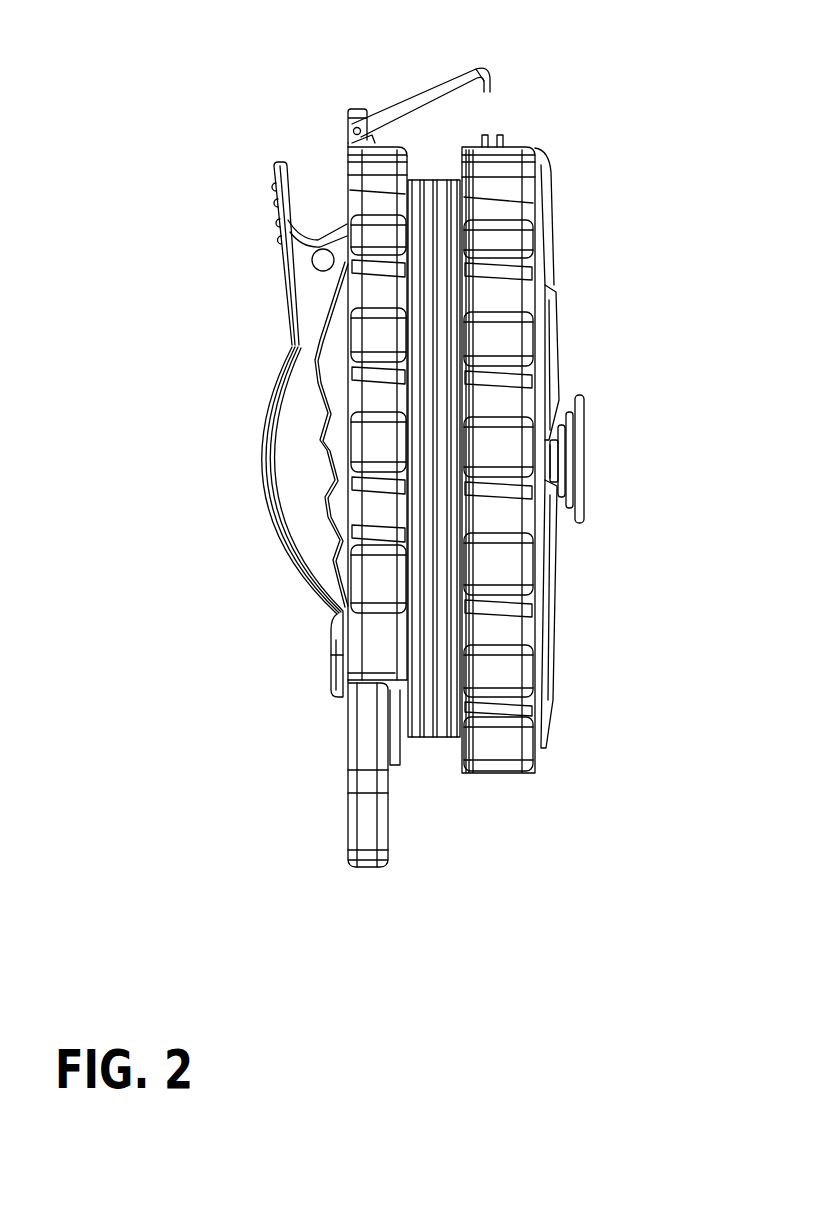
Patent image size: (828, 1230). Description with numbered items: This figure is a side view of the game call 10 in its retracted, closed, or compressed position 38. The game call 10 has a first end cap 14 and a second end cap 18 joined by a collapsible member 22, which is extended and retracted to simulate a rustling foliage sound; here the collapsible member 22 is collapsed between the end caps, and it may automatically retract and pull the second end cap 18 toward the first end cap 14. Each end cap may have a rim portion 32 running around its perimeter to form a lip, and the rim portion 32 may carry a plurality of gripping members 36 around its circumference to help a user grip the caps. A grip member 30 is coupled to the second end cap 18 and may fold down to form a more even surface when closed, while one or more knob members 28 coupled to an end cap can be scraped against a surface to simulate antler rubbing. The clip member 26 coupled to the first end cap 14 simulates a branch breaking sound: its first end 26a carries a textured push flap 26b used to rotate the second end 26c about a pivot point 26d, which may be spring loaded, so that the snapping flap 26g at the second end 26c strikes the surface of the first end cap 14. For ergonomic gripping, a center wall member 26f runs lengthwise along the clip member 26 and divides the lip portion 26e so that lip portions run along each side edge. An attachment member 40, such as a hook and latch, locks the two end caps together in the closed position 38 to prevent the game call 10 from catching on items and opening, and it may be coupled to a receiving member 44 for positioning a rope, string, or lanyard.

The game call 10 is at (208, 150).
The first end cap 14 is at (347, 708).
The second end cap 18 is at (543, 633).
The collapsible member 22 is at (432, 745).
The clip member 26 is at (305, 320).
The first end 26a is at (264, 227).
The textured push flap 26b is at (273, 188).
The second end 26c is at (313, 626).
The pivot point 26d is at (320, 260).
The lip portion 26e is at (268, 490).
The center wall member 26f is at (306, 470).
The snapping flap 26g is at (340, 660).
The knob member 28 is at (347, 760).
The grip member 30 is at (584, 473).
The rim portion 32 is at (500, 748).
The gripping members 36 is at (385, 242).
The closed position 38 is at (580, 762).
The attachment member 40 is at (450, 90).
The receiving member 44 is at (353, 127).